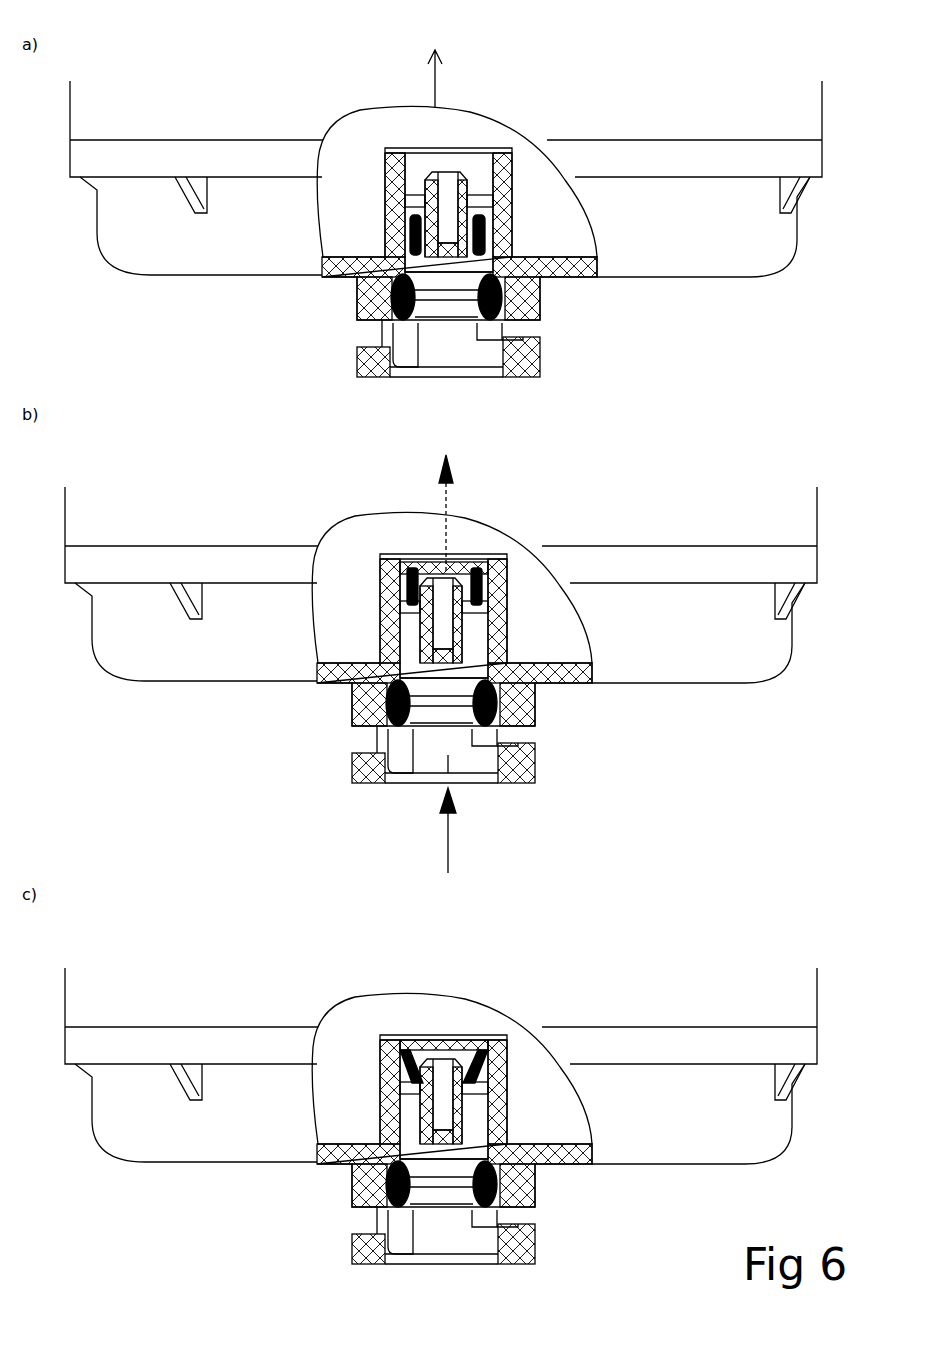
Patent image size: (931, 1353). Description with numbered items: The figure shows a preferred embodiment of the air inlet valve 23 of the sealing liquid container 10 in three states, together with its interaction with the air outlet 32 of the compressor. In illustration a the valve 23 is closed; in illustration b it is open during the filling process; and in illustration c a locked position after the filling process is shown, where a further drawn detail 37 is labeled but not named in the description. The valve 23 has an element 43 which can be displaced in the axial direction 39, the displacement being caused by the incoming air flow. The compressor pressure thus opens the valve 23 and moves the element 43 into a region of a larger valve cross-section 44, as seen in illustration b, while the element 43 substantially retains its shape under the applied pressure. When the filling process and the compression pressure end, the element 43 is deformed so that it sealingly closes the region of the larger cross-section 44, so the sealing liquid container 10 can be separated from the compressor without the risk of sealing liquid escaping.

The sealing liquid container 10 is at (474, 1057).
The air inlet valve 23 is at (357, 320).
The air outlet 32 is at (540, 357).
The sealing lip 37 is at (519, 1016).
The axial direction 39 is at (455, 61).
The element 43 is at (395, 240).
The larger valve cross-section 44 is at (480, 170).